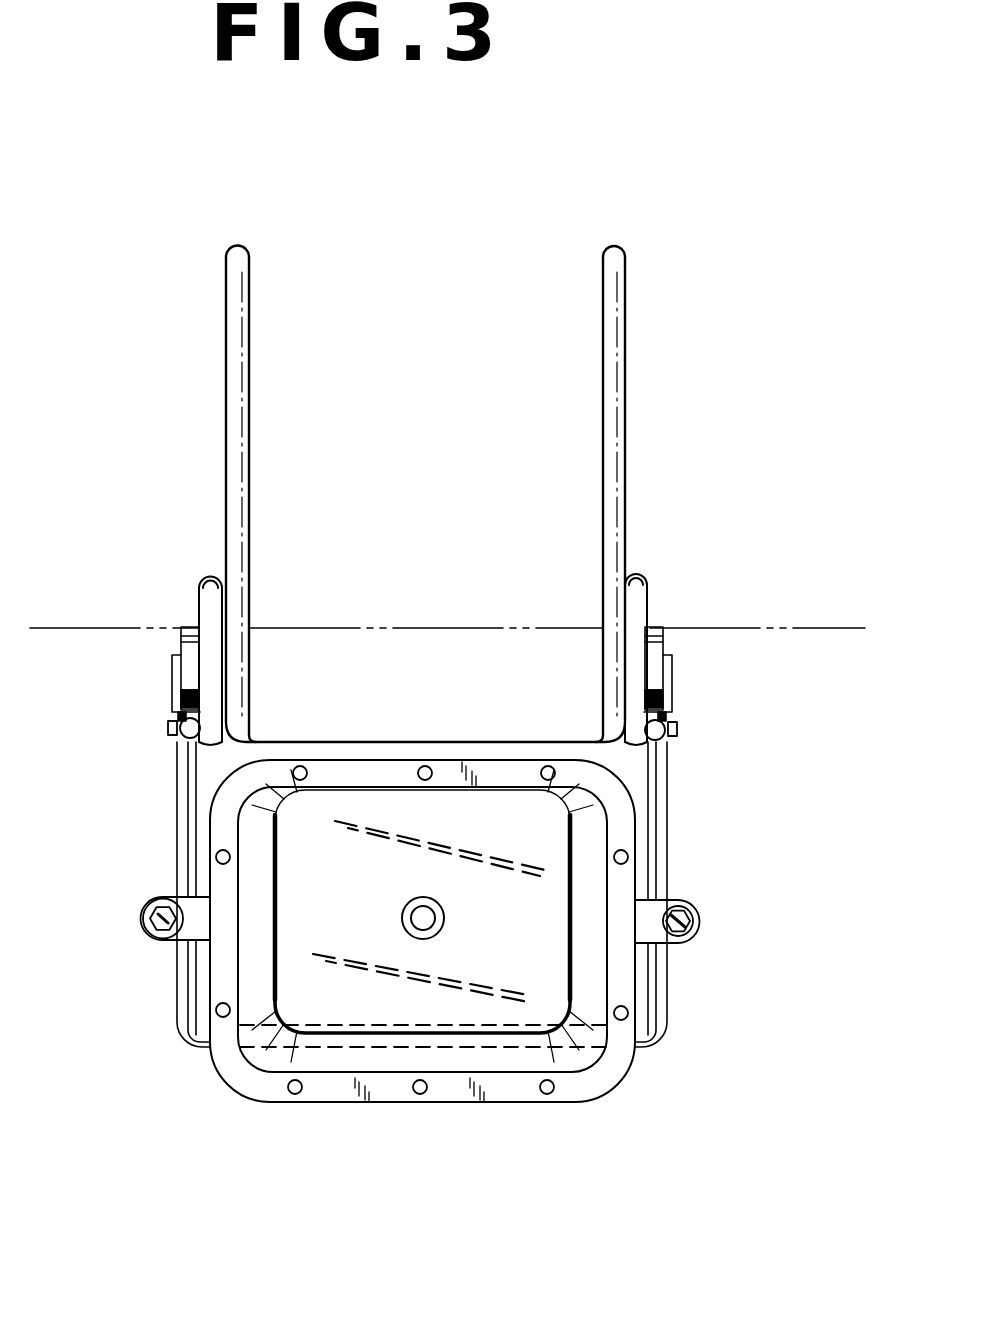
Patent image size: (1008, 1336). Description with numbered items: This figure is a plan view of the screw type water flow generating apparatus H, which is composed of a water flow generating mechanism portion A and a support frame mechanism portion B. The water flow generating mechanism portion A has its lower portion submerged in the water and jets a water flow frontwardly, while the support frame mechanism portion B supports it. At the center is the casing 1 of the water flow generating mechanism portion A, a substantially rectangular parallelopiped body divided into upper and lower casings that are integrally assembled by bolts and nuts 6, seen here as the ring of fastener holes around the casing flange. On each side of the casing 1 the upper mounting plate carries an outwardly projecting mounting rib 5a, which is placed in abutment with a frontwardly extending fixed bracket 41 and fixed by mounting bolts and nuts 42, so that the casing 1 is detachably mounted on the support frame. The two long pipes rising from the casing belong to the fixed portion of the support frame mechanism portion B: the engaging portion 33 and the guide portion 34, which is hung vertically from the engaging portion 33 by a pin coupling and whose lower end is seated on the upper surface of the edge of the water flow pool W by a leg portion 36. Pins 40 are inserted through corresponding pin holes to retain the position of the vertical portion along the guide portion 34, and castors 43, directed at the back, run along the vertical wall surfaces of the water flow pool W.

The casing 1 is at (336, 897).
The mounting rib 5a is at (158, 898).
The bolts and nuts 6 is at (414, 1094).
The engaging portion 33 is at (232, 352).
The guide portion 34 is at (641, 610).
The leg portion 36 is at (200, 572).
The pins 40 is at (678, 730).
The fixed bracket 41 is at (180, 773).
The mounting bolts and nuts 42 is at (153, 938).
The castors 43 is at (173, 647).
The water flow generating mechanism portion A is at (507, 1110).
The support frame mechanism portion B is at (680, 846).
The screw type water flow generating apparatus H is at (850, 1038).
The water flow pool W is at (820, 640).